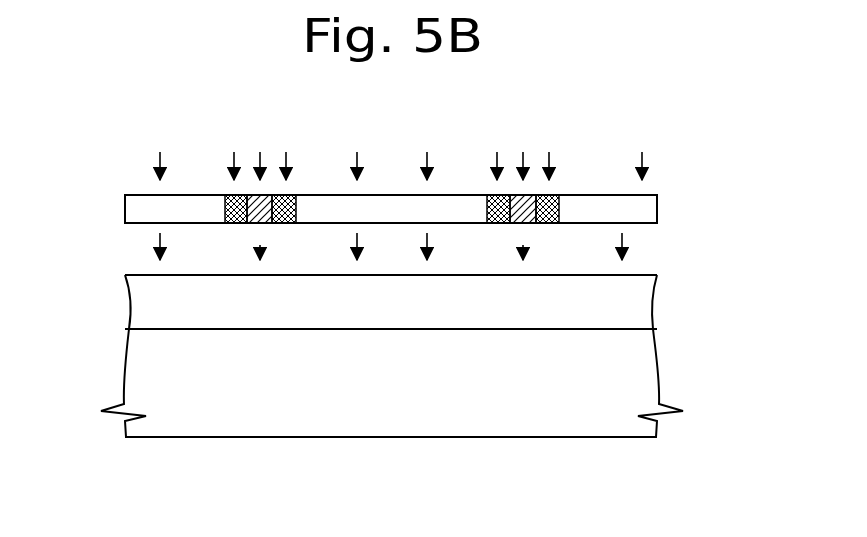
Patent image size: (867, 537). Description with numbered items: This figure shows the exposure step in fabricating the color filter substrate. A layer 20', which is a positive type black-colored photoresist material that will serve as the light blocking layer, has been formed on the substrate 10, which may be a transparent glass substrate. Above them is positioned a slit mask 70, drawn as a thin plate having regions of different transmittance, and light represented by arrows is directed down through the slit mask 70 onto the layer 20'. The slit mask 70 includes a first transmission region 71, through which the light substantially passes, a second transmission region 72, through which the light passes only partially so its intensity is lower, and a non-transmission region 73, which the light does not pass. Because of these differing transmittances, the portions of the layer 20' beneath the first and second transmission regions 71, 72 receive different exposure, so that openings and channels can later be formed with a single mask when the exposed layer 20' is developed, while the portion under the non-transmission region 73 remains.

The slit mask 70 is at (664, 210).
The first transmission region 71 is at (137, 209).
The second transmission region 72 is at (263, 200).
The non-transmission region 73 is at (226, 196).
The layer 20' is at (430, 302).
The substrate 10 is at (645, 374).